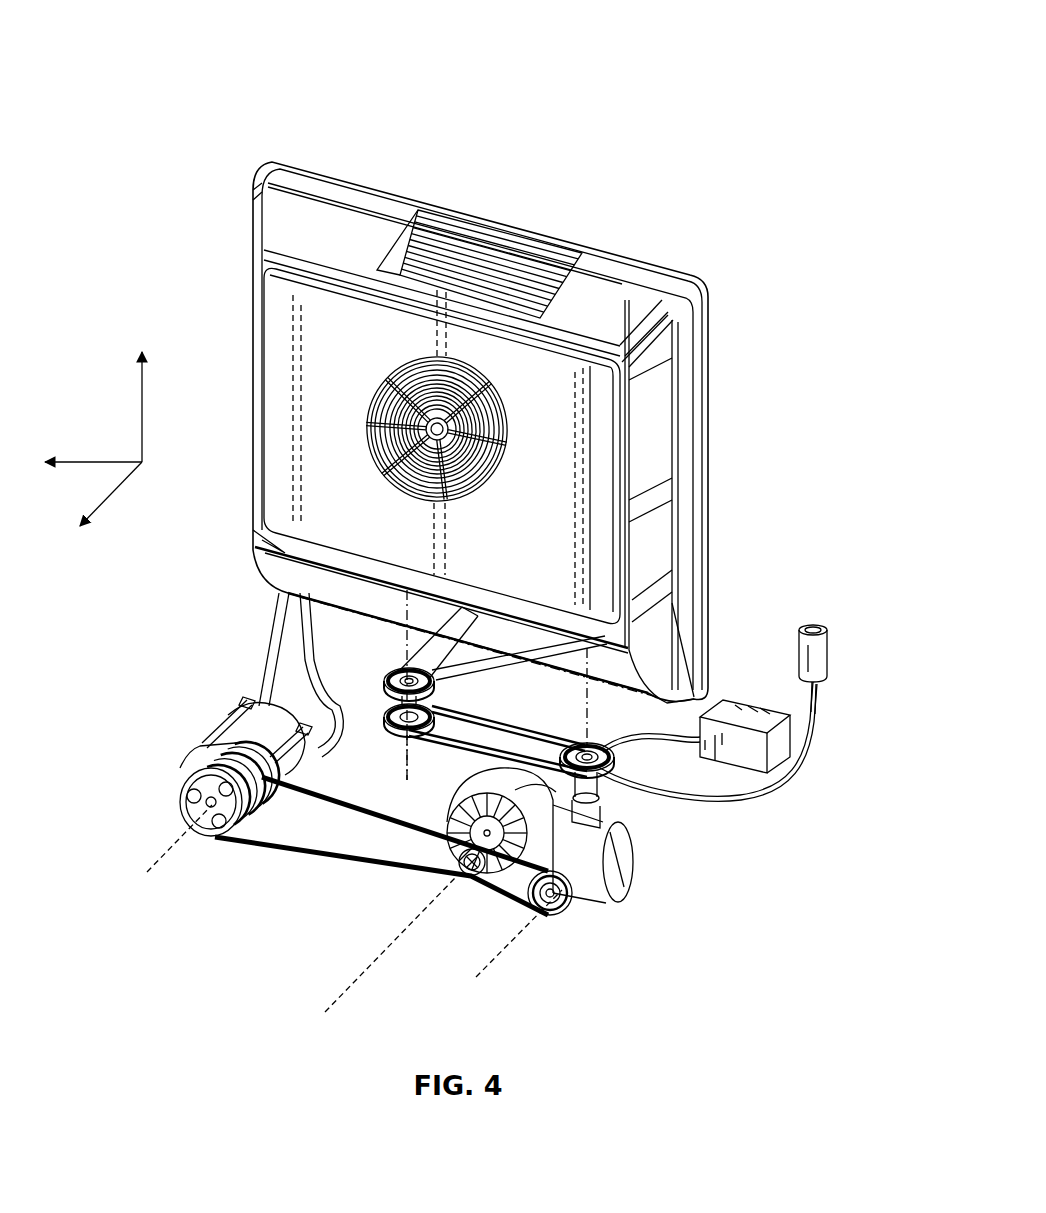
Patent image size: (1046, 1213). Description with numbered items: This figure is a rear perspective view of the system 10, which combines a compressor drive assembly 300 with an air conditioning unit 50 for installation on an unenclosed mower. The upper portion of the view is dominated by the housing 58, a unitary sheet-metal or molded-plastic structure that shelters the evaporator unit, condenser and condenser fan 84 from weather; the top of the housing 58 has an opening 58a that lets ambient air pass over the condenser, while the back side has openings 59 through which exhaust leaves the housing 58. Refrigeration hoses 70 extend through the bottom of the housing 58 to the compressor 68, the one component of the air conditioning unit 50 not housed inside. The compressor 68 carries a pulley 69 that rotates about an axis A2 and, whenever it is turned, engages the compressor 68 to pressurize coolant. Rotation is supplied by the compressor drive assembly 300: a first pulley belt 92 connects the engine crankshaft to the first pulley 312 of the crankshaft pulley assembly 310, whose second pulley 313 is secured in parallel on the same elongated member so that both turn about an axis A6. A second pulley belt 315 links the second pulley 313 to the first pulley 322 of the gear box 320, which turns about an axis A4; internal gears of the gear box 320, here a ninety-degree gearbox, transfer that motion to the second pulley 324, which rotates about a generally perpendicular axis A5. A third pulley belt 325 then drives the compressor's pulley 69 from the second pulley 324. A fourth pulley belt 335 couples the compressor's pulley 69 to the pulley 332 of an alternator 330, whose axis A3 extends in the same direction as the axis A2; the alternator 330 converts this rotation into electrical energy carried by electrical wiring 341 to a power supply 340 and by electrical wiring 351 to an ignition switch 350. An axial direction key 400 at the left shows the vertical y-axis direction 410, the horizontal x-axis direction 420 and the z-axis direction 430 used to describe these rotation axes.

The system 10 is at (122, 54).
The air conditioning unit 50 is at (198, 205).
The housing 58 is at (336, 204).
The opening 58a is at (455, 262).
The openings 59 is at (398, 358).
The condenser fan 84 is at (482, 460).
The axial direction key 400 is at (102, 331).
The y-axis direction 410 is at (142, 400).
The x-axis direction 420 is at (108, 498).
The z-axis direction 430 is at (95, 462).
The compressor drive assembly 300 is at (682, 934).
The refrigeration hoses 70 is at (272, 655).
The compressor 68 is at (238, 727).
The pulley 69 is at (185, 790).
The fourth pulley belt 335 is at (303, 767).
The third pulley belt 325 is at (360, 867).
The alternator pulley 332 is at (437, 890).
The alternator 330 is at (477, 900).
The second pulley 324 is at (570, 920).
The gear box 320 is at (630, 867).
The first pulley 322 is at (660, 815).
The crankshaft pulley assembly 310 is at (370, 685).
The first pulley 312 is at (440, 642).
The second pulley 313 is at (414, 776).
The first pulley belt 92 is at (465, 673).
The second pulley belt 315 is at (497, 728).
The electrical wiring 341 is at (707, 778).
The power supply 340 is at (785, 745).
The ignition switch 350 is at (833, 652).
The electrical wiring 351 is at (823, 714).
The axis A2 is at (163, 848).
The axis A3 is at (340, 995).
The axis A4 is at (590, 718).
The axis A5 is at (487, 957).
The axis A6 is at (372, 860).